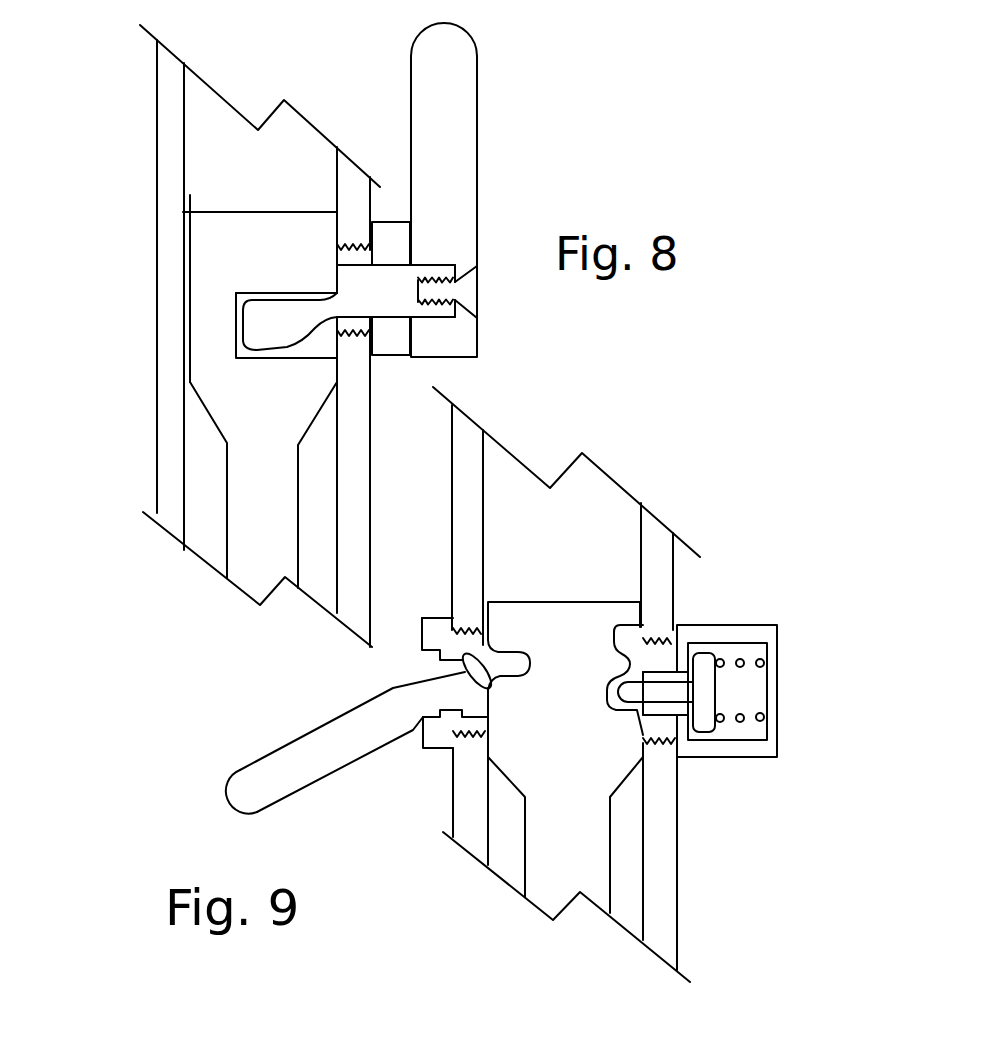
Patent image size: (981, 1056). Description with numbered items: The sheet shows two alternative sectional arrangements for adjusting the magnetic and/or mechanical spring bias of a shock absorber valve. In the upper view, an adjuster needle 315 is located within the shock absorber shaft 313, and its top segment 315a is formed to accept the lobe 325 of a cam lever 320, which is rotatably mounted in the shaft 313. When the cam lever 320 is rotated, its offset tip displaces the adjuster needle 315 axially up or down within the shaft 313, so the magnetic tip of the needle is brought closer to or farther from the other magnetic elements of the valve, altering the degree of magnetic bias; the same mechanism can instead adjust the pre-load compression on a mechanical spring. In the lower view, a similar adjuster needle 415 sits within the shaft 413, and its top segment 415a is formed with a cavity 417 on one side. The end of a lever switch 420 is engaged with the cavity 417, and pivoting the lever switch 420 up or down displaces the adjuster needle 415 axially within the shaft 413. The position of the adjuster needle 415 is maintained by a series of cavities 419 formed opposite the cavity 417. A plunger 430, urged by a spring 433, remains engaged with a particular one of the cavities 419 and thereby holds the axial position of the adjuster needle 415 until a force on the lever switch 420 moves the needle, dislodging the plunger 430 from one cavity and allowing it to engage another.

In FIG. 8, the shock absorber shaft 313 is at (173, 158).
In FIG. 8, the top segment 315a is at (227, 245).
In FIG. 8, the adjuster needle 315 is at (255, 510).
In FIG. 8, the cam lever 320 is at (455, 158).
In FIG. 8, the lobe 325 is at (255, 333).
In FIG. 9, the shaft 413 is at (660, 837).
In FIG. 9, the adjuster needle 415 is at (545, 847).
In FIG. 9, the top segment 415a is at (527, 615).
In FIG. 9, the cavity 417 is at (623, 638).
In FIG. 9, the cavities 419 is at (677, 753).
In FIG. 9, the lever switch 420 is at (283, 767).
In FIG. 9, the plunger 430 is at (673, 690).
In FIG. 9, the spring 433 is at (744, 721).